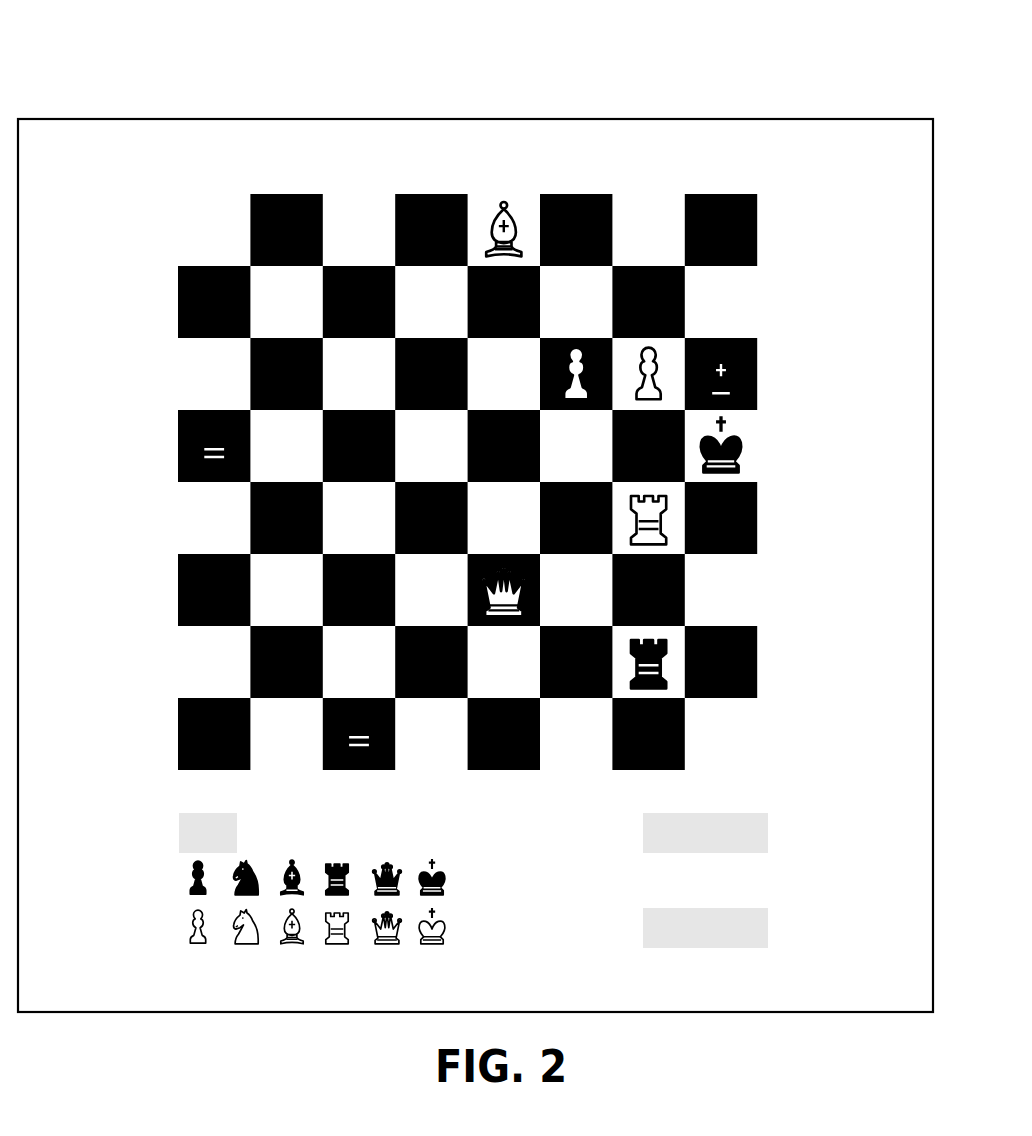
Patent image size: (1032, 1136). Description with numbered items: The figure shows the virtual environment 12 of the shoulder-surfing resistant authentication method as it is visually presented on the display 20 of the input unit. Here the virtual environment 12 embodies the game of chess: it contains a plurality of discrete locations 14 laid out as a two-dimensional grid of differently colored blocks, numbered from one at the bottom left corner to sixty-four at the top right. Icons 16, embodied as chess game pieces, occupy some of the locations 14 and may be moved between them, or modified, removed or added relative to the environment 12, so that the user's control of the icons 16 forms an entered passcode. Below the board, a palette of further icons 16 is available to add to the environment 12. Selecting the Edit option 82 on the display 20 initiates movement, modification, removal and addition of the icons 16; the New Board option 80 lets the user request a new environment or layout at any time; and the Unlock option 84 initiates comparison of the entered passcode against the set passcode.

The display 20 is at (183, 119).
The virtual environment 12 is at (590, 158).
The discrete locations 14 is at (427, 293).
The icons 16 is at (503, 215).
The Edit option 82 is at (178, 836).
The New Board option 80 is at (770, 836).
The Unlock option 84 is at (755, 928).